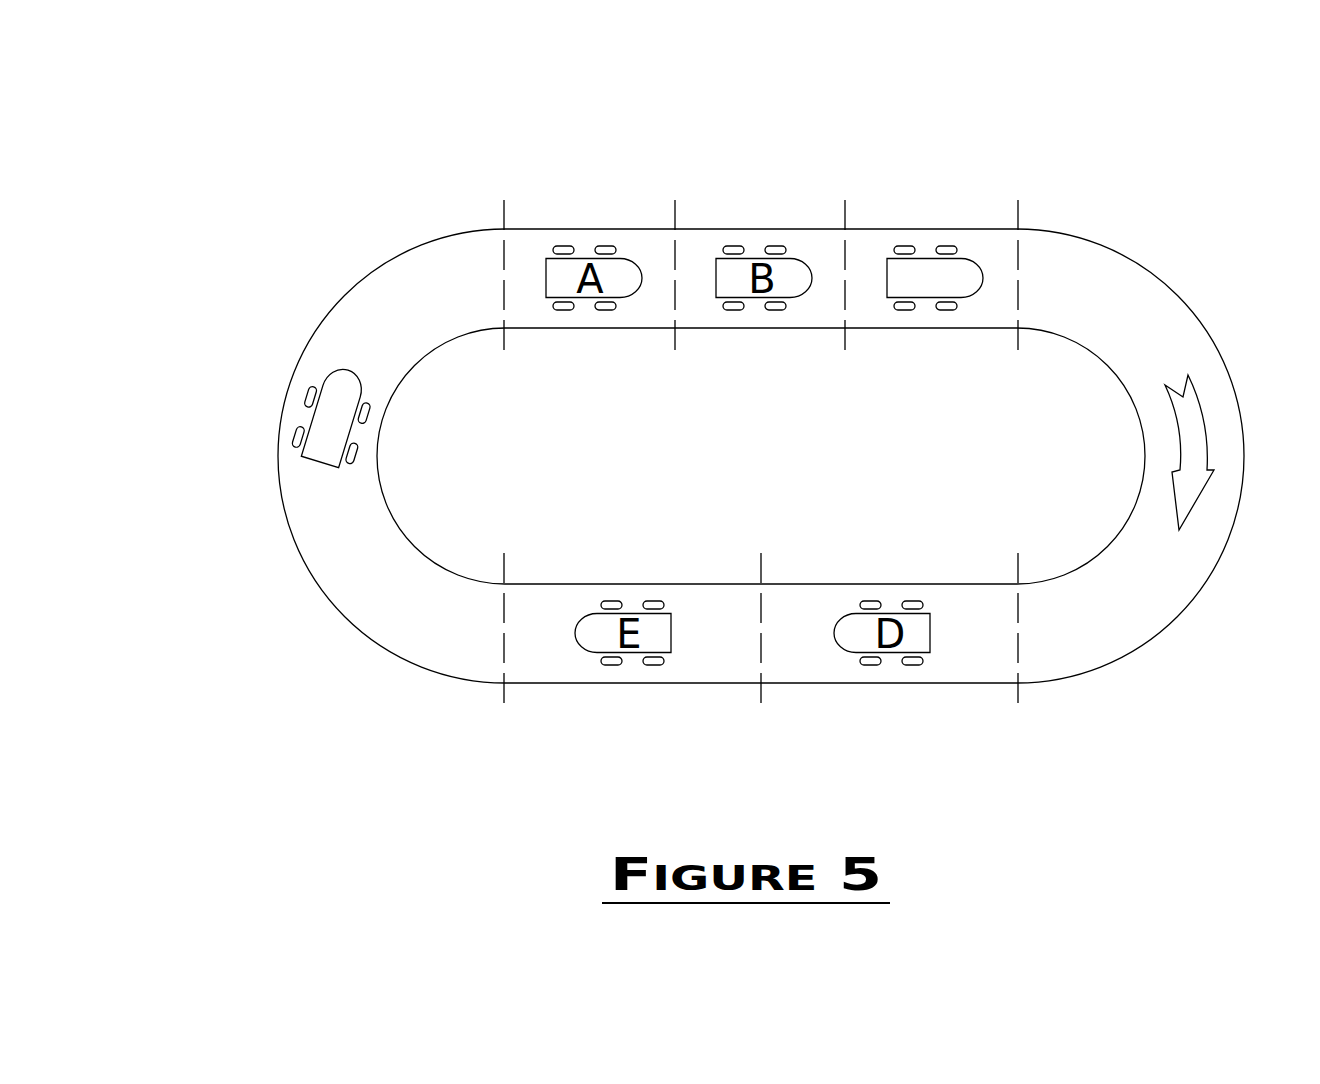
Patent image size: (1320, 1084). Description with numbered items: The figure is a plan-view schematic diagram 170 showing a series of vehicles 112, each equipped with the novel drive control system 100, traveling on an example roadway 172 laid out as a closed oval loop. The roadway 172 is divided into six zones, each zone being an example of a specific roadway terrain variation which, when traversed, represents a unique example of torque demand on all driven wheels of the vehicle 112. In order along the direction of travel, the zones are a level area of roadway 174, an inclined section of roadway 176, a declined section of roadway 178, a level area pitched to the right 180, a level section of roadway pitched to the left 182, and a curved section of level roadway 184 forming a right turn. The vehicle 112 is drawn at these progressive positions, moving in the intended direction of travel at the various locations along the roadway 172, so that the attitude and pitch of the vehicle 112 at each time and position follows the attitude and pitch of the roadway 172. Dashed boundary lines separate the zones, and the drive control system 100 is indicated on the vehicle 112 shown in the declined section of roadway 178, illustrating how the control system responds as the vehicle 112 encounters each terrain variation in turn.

The drive control system 100 is at (968, 278).
The vehicle 112 is at (342, 388).
The schematic diagram 170 is at (1245, 237).
The roadway 172 is at (1073, 642).
The level area of roadway 174 is at (603, 172).
The inclined section of roadway 176 is at (768, 170).
The declined section of roadway 178 is at (935, 170).
The level area pitched to the right 180 is at (887, 777).
The level section of roadway pitched to the left 182 is at (635, 778).
The curved section of level roadway 184 is at (127, 482).